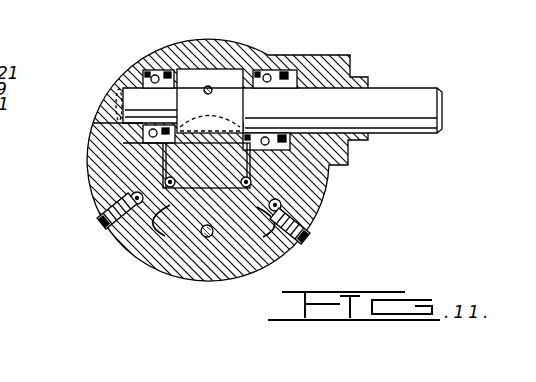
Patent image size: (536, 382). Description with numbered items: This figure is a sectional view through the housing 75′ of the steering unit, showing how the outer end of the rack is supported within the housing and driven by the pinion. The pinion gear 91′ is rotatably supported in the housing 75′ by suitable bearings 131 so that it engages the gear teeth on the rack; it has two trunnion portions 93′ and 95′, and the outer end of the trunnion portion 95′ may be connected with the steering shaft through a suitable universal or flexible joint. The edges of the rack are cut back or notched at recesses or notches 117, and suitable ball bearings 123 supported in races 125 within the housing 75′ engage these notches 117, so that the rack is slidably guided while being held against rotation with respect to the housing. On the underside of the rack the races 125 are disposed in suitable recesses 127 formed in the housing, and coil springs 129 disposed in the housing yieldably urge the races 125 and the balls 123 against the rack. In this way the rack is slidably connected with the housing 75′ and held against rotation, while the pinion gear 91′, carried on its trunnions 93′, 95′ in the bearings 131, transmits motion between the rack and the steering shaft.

The housing 75′ is at (89, 160).
The pinion gear 91′ is at (196, 80).
The trunnion portion 93′ is at (134, 90).
The trunnion portion 95′ is at (300, 56).
The recesses or notches 117 is at (177, 135).
The ball bearings 123 is at (166, 181).
The races 125 is at (226, 217).
The recesses 127 is at (143, 245).
The coil springs 129 is at (104, 224).
The bearings 131 is at (161, 72).